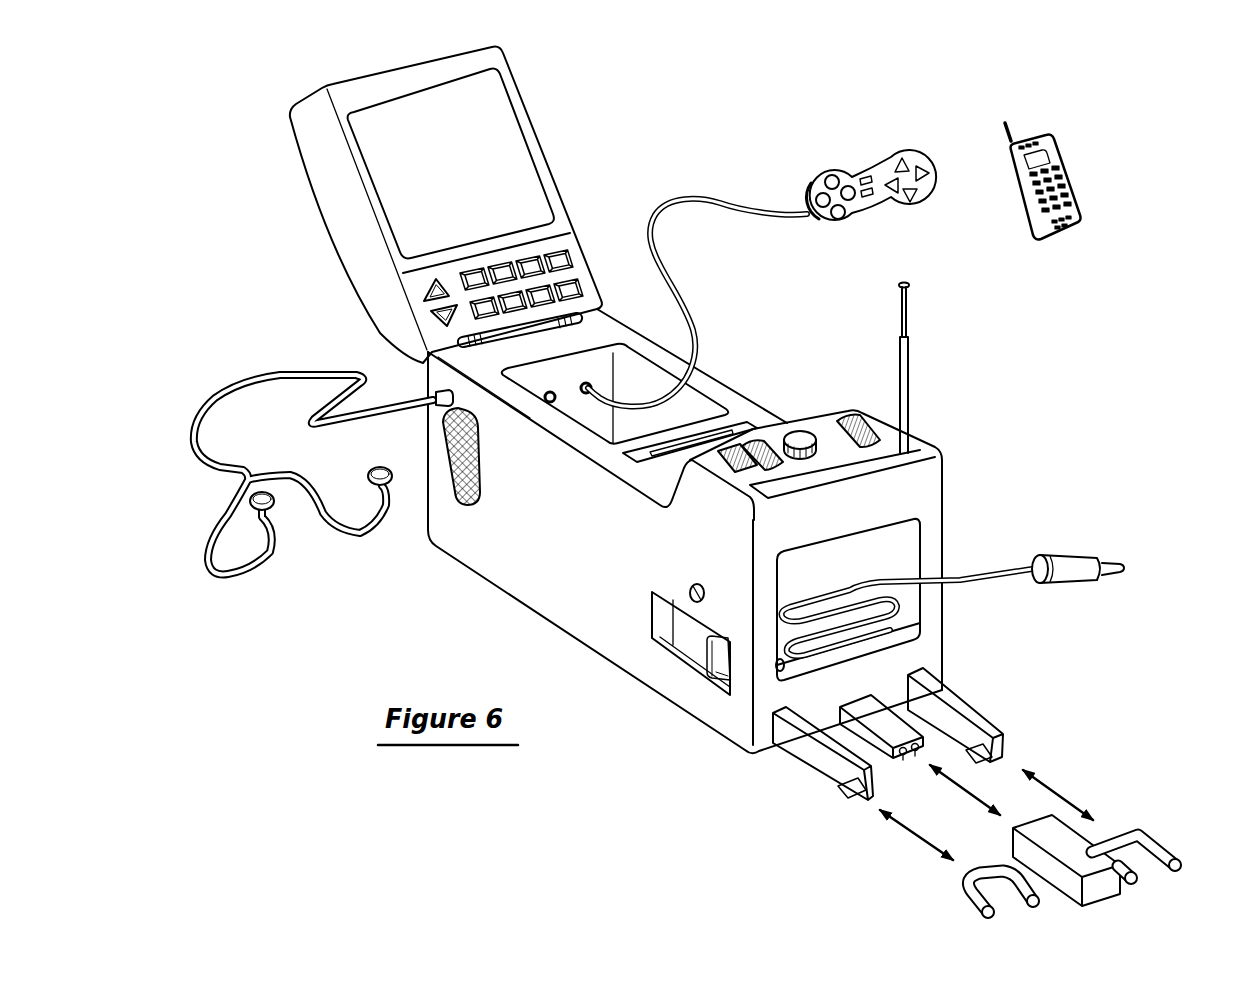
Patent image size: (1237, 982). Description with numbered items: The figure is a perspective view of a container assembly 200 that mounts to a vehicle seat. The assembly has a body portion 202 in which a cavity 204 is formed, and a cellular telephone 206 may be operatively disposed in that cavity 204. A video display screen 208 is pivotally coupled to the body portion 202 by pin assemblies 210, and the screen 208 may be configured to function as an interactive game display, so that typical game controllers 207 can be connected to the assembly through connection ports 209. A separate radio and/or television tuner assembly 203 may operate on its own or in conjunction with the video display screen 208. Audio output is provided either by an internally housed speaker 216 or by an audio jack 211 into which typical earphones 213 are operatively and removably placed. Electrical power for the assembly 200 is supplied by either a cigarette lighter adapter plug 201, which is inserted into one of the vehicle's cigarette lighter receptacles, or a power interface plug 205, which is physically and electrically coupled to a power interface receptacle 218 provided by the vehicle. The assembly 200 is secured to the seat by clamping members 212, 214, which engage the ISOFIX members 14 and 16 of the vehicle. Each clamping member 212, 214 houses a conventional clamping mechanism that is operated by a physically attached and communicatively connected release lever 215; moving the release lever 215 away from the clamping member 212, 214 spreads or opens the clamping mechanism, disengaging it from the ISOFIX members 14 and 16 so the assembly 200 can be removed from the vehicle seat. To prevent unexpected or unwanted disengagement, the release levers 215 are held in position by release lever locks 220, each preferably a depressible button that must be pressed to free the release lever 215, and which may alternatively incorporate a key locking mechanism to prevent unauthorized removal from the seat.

The container assembly 200 is at (1100, 289).
The cigarette lighter adapter plug 201 is at (1073, 555).
The body portion 202 is at (727, 400).
The radio and/or television tuner assembly 203 is at (908, 422).
The cavity 204 is at (633, 377).
The power interface plug 205 is at (884, 707).
The cellular telephone 206 is at (1018, 196).
The game controllers 207 is at (818, 175).
The video display screen 208 is at (528, 123).
The connection ports 209 is at (550, 402).
The pin assemblies 210 is at (475, 350).
The audio jack 211 is at (482, 496).
The clamping member 212 is at (987, 723).
The earphones 213 is at (327, 530).
The clamping member 214 is at (843, 758).
The release lever 215 is at (705, 660).
The speaker 216 is at (427, 548).
The power interface receptacle 218 is at (1100, 903).
The release lever lock 220 is at (690, 593).
The ISOFIX member 14 is at (1160, 840).
The ISOFIX member 16 is at (960, 906).